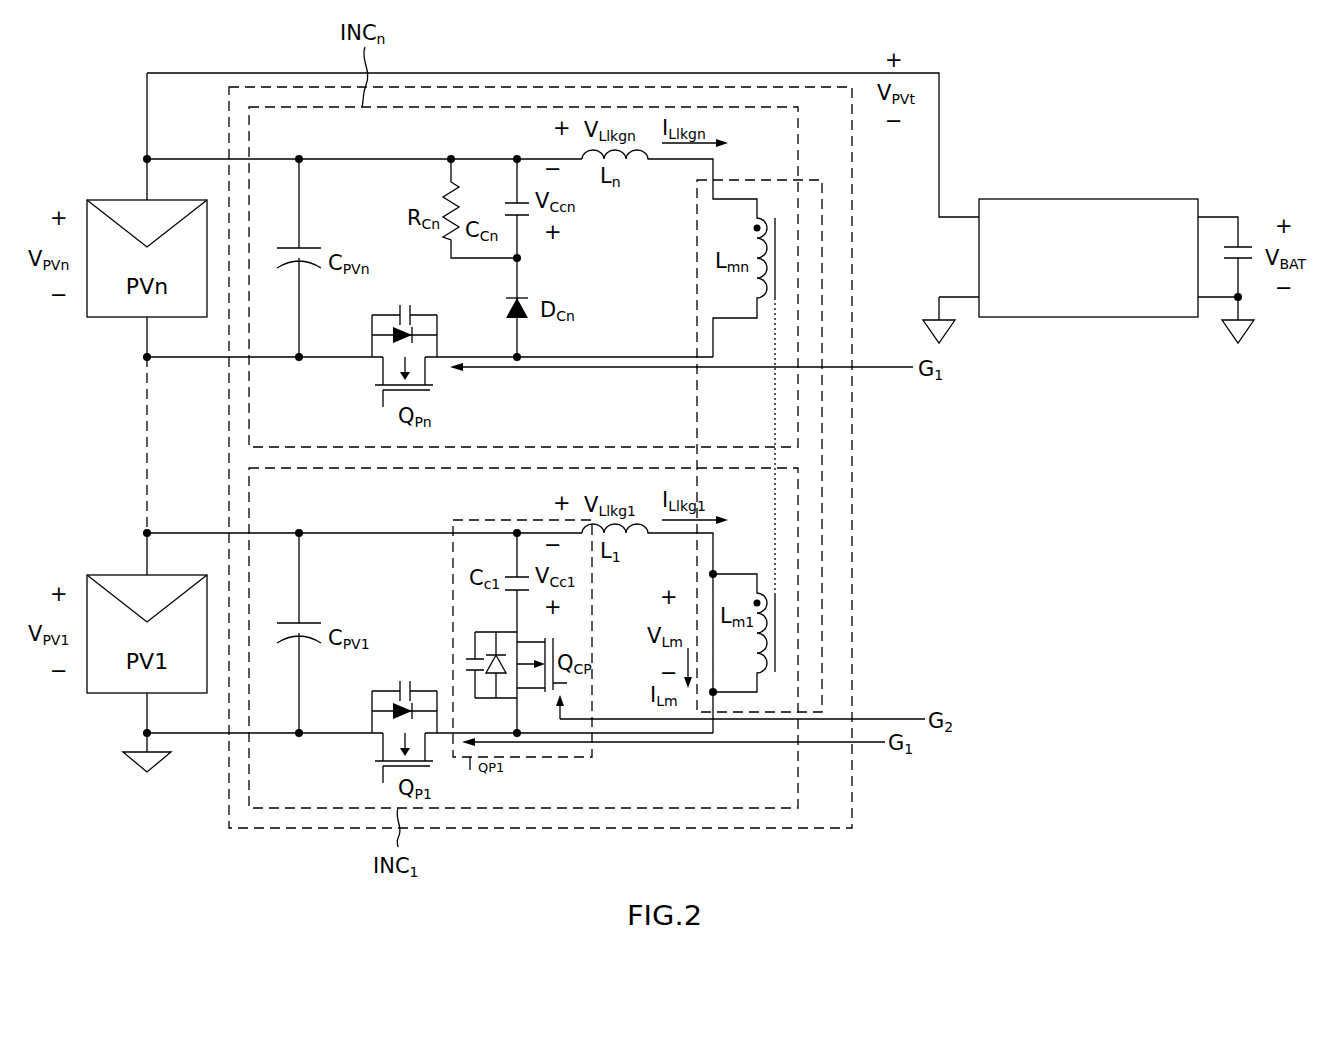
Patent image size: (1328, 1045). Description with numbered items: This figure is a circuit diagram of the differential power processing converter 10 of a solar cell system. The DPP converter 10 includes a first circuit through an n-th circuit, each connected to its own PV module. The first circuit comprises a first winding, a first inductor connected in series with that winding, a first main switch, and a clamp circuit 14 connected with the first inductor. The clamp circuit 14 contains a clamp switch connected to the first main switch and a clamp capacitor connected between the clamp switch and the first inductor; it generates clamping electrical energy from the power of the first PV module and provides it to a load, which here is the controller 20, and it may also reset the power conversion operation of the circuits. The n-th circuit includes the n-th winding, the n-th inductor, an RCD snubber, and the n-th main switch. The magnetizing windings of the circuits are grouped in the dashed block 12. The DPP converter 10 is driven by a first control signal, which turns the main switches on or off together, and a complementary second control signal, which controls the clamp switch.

The differential power processing converter 10 is at (852, 782).
The transformer magnetizing inductance block 12 is at (823, 420).
The clamp circuit 14 is at (545, 757).
The controller 20 is at (1086, 199).